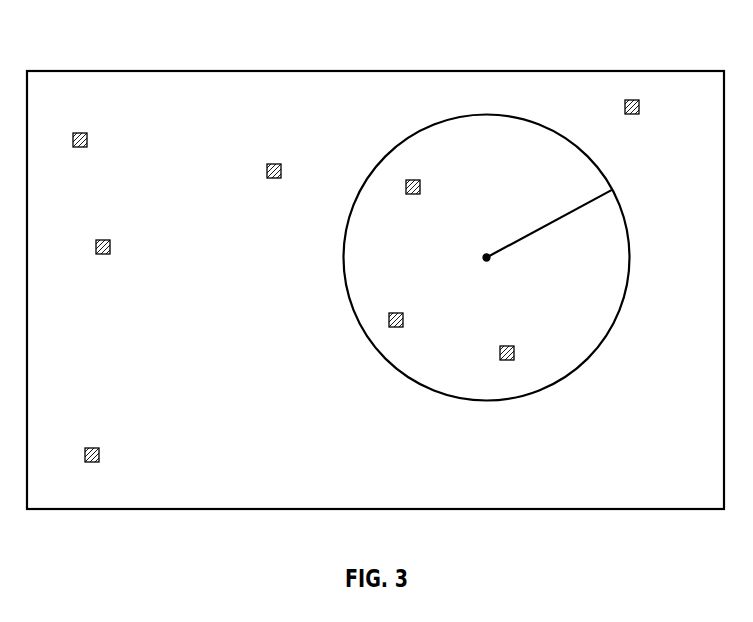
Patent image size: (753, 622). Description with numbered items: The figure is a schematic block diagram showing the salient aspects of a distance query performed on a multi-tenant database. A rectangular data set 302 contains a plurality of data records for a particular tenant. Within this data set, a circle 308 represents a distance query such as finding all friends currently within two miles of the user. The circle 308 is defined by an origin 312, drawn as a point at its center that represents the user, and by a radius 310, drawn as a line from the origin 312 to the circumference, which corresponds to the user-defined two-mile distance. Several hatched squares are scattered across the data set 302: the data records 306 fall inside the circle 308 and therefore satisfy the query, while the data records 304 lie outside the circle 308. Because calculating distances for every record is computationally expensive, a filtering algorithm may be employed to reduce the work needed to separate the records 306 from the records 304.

The data set 302 is at (600, 71).
The data records 304 is at (87, 139).
The data records 306 is at (420, 186).
The circle 308 is at (344, 258).
The radius 310 is at (550, 222).
The origin 312 is at (489, 262).